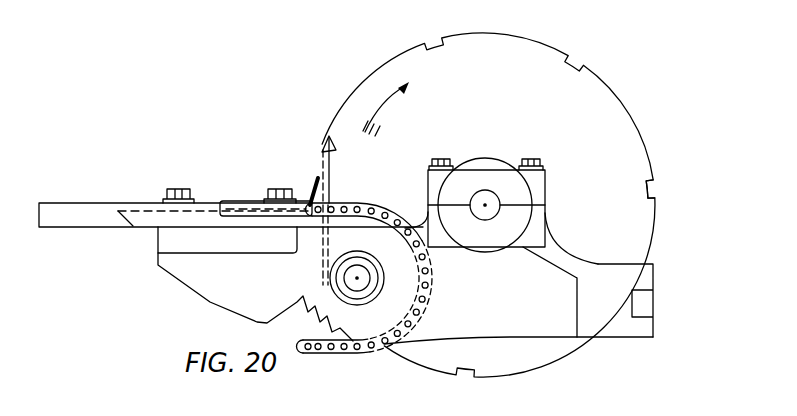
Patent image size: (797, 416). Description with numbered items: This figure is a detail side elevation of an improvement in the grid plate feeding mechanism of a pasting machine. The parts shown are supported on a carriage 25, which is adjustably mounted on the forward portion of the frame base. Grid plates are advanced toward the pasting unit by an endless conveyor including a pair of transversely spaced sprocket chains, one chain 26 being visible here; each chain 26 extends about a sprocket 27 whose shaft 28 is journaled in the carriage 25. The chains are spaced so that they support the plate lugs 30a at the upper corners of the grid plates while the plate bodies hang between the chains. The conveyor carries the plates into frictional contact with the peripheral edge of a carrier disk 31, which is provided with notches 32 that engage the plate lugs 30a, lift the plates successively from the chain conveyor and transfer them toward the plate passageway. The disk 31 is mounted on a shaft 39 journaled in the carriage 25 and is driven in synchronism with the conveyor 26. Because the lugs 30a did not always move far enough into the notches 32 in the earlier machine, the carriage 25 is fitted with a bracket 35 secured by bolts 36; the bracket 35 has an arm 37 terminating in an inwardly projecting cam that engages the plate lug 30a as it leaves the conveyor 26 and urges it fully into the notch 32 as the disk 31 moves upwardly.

The carriage 25 is at (205, 295).
The sprocket chain 26 is at (352, 208).
The sprocket 27 is at (369, 228).
The shaft 28 is at (360, 280).
The plate lug 30a is at (323, 152).
The carrier disk 31 is at (628, 143).
The notch 32 is at (653, 189).
The bracket 35 is at (252, 215).
The bolt 36 is at (282, 193).
The arm 37 is at (316, 190).
The shaft 39 is at (487, 203).